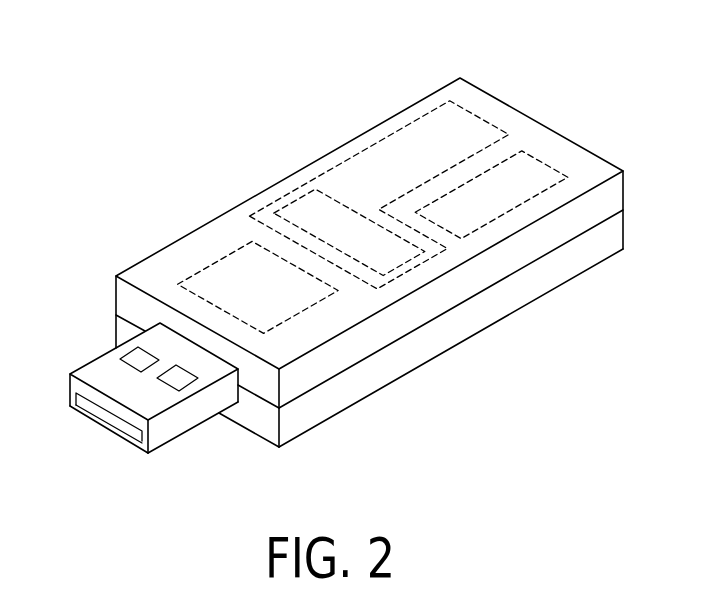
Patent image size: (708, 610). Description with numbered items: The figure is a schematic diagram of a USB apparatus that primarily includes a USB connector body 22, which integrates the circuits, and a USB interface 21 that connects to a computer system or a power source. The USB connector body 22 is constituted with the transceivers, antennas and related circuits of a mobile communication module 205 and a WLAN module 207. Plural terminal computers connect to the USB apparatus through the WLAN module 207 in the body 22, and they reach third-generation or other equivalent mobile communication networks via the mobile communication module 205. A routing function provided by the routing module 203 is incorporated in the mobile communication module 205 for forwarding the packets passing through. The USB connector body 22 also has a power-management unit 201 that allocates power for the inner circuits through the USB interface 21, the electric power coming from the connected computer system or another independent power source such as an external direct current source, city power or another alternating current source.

The USB interface 21 is at (105, 370).
The USB connector body 22 is at (325, 155).
The power-management unit 201 is at (217, 260).
The routing module 203 is at (295, 203).
The mobile communication module 205 is at (472, 122).
The WLAN module 207 is at (548, 160).